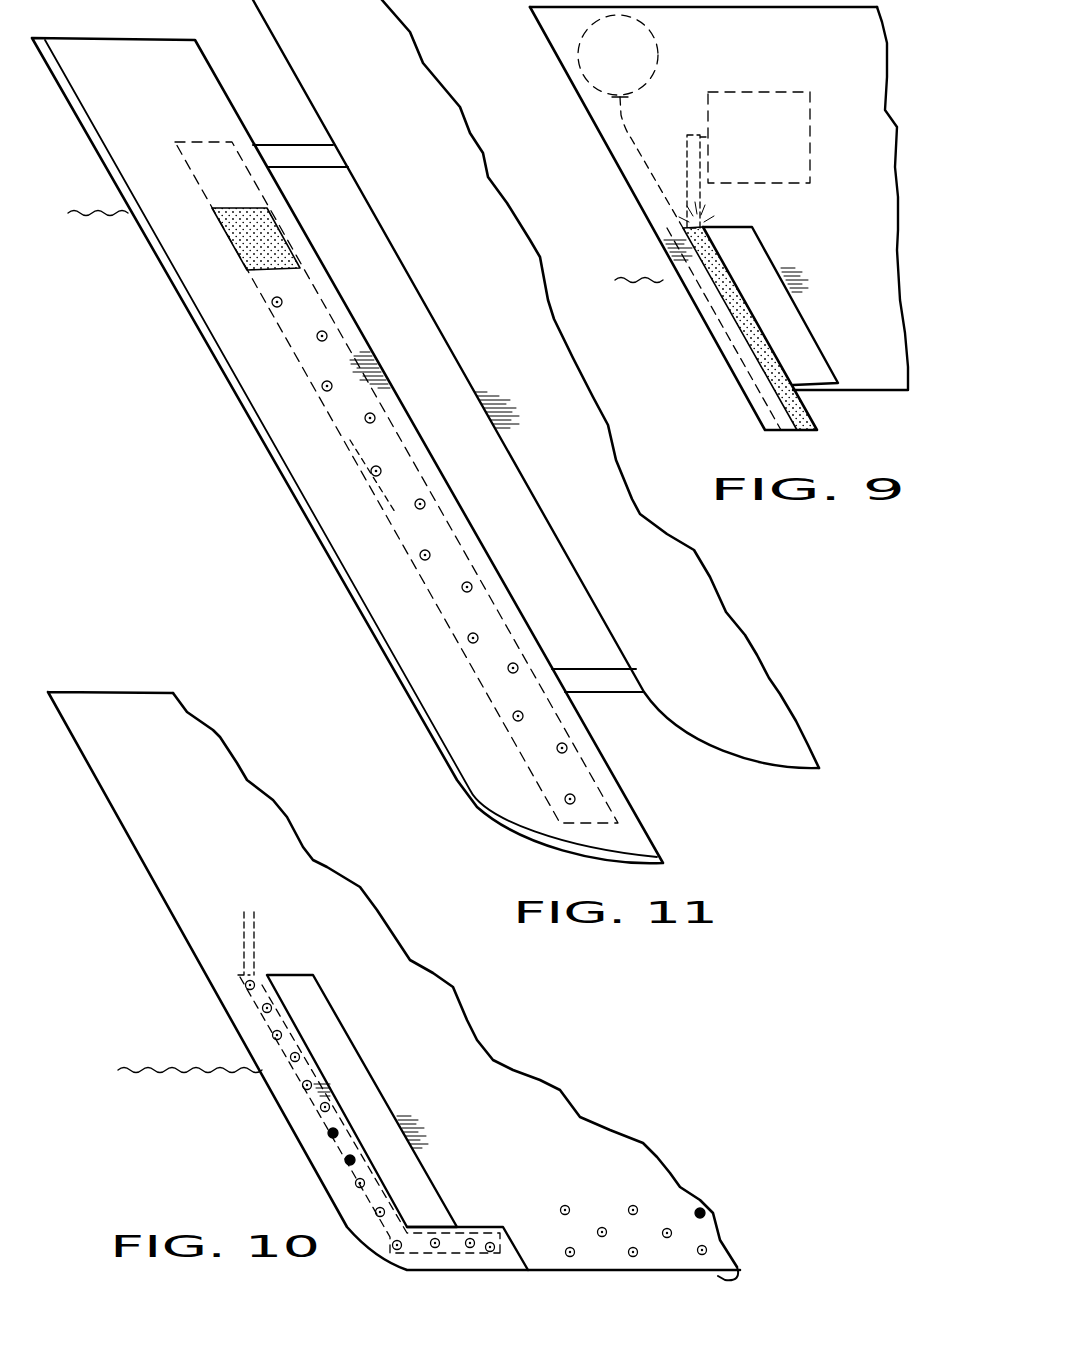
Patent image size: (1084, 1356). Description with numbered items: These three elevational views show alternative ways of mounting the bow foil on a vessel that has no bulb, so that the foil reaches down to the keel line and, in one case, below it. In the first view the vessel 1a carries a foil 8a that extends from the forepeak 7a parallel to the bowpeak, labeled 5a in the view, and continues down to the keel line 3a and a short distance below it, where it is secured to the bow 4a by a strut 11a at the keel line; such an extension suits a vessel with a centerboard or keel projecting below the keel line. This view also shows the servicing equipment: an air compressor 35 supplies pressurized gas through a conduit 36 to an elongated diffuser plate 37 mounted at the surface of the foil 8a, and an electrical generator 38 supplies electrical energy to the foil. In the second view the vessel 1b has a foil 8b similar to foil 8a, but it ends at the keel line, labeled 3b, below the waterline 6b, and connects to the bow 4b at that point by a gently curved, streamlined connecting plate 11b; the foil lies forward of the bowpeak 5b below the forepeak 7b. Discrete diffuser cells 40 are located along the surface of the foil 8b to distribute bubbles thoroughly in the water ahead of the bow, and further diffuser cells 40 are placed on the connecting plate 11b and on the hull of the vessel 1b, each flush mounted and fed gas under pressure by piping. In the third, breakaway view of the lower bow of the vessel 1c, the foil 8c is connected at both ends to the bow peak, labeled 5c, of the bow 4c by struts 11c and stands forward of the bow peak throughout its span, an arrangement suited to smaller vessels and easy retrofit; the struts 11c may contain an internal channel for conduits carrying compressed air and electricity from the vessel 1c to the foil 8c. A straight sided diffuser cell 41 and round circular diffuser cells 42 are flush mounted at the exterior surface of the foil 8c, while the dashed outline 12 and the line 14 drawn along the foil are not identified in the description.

In FIG. 9, the vessel 1a is at (868, 196).
In FIG. 10, the vessel 1b is at (318, 866).
In FIG. 11, the vessel 1c is at (606, 428).
In FIG. 9, the keel line 3a is at (887, 392).
In FIG. 10, the bottom edge 3b is at (738, 1272).
In FIG. 9, the bow 4a is at (838, 315).
In FIG. 10, the bow 4b is at (460, 1107).
In FIG. 11, the side plate 4c is at (608, 551).
In FIG. 9, the panel 5a is at (788, 292).
In FIG. 10, the panel 5b is at (356, 1050).
In FIG. 11, the panel 5c is at (447, 343).
In FIG. 10, the water line 6b is at (170, 1068).
In FIG. 9, the forepeak 7a is at (648, 214).
In FIG. 10, the wall plate 7b is at (190, 940).
In FIG. 9, the foil 8a is at (702, 314).
In FIG. 10, the foil 8b is at (294, 1130).
In FIG. 11, the foil 8c is at (338, 550).
In FIG. 9, the strut 11a is at (820, 383).
In FIG. 10, the connecting plate 11b is at (407, 1272).
In FIG. 11, the struts 11c is at (305, 145).
In FIG. 11, the seal boundary 12 is at (232, 170).
In FIG. 11, the center line 14 is at (351, 446).
In FIG. 9, the air compressor 35 is at (768, 145).
In FIG. 9, the conduit 36 is at (682, 158).
In FIG. 9, the elongated diffuser plate 37 is at (698, 226).
In FIG. 9, the electrical generator 38 is at (626, 74).
In FIG. 10, the diffuser cells 40 is at (336, 1133).
In FIG. 11, the straight sided diffuser cell 41 is at (214, 212).
In FIG. 11, the round circular diffuser cells 42 is at (316, 341).